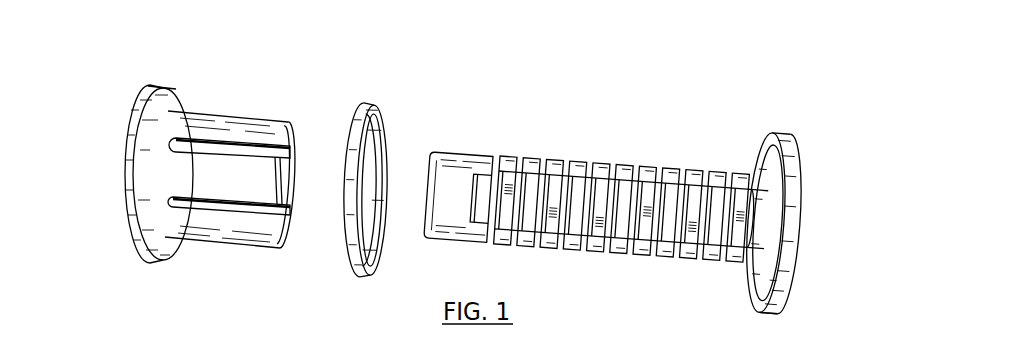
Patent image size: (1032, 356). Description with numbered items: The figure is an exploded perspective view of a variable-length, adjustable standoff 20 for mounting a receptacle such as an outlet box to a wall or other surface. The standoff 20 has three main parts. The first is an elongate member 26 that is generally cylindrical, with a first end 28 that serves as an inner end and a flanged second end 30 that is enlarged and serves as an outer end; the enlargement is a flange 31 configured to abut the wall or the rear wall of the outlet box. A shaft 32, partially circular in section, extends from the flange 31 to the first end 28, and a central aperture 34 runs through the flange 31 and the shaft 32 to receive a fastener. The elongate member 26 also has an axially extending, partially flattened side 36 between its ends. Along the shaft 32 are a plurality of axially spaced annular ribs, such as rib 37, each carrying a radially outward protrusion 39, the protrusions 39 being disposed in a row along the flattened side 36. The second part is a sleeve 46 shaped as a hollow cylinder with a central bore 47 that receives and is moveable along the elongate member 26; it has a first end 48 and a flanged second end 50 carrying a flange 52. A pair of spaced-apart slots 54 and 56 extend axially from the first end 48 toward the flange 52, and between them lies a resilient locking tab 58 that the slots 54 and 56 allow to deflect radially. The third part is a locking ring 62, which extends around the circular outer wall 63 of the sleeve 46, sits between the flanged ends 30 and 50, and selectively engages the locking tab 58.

The adjustable standoff 20 is at (629, 199).
The elongate member 26 is at (795, 232).
The first end 28 is at (450, 218).
The flanged second end 30 is at (788, 280).
The flange 31 is at (770, 303).
The shaft 32 is at (722, 164).
The central aperture 34 is at (806, 218).
The partially flattened side 36 is at (464, 208).
The annular rib 37 is at (626, 168).
The protrusion 39 is at (623, 190).
The sleeve 46 is at (210, 154).
The central bore 47 is at (190, 154).
The first end 48 is at (243, 159).
The flanged second end 50 is at (145, 154).
The flange 52 is at (155, 90).
The slot 54 is at (285, 155).
The slot 56 is at (279, 209).
The locking tab 58 is at (273, 180).
The locking ring 62 is at (370, 107).
The circular outer wall 63 is at (238, 122).